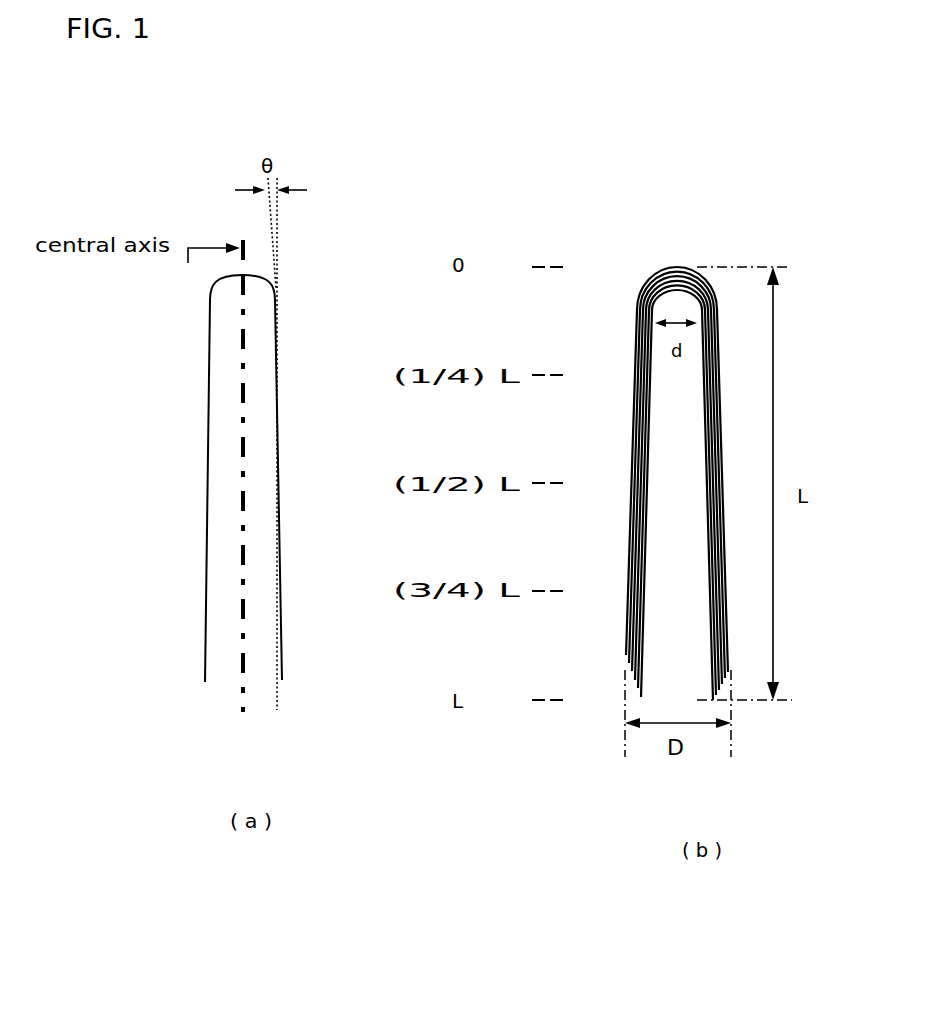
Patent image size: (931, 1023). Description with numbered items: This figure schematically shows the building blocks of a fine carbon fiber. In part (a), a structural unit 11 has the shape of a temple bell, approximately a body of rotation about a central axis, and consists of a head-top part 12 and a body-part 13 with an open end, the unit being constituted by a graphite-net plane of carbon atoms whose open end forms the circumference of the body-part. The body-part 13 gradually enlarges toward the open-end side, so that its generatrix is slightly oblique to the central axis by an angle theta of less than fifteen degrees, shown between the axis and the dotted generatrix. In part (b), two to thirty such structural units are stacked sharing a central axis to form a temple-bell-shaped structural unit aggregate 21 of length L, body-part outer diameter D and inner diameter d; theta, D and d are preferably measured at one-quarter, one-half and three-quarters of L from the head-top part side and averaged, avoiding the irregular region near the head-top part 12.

The structural unit 11 is at (157, 490).
The head-top part 12 is at (219, 282).
The body-part 13 is at (210, 367).
The temple-bell-shaped structural unit aggregate 21 is at (590, 231).